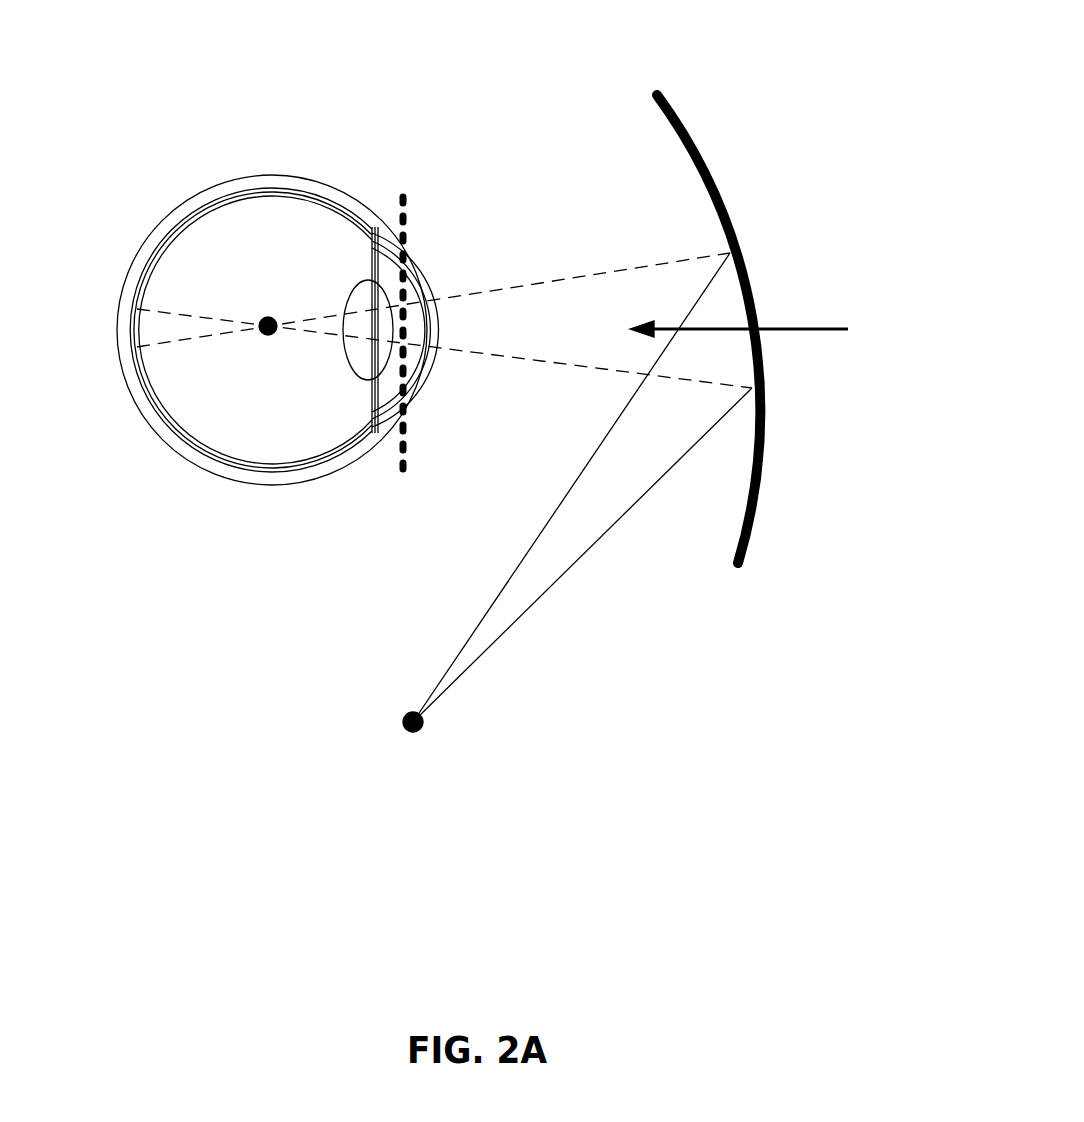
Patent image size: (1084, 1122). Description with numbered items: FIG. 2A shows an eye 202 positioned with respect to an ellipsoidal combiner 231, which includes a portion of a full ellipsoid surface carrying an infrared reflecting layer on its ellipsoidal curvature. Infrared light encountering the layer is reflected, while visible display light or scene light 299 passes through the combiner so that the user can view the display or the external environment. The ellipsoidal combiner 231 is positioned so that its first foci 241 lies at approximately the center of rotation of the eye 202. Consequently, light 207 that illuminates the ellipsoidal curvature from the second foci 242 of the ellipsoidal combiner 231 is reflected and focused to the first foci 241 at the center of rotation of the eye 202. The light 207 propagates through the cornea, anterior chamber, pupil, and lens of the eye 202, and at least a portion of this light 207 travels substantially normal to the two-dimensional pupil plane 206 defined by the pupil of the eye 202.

The eye 202 is at (305, 178).
The ellipsoidal combiner 231 is at (687, 117).
The first foci 241 is at (268, 322).
The second foci 242 is at (421, 722).
The pupil plane 206 is at (403, 500).
The light 207 is at (167, 369).
The display light or scene light 299 is at (758, 329).